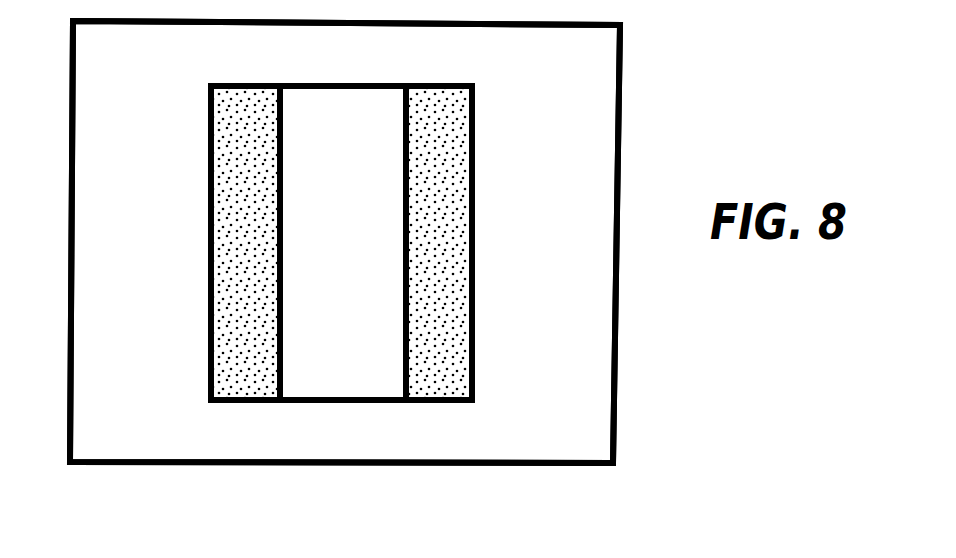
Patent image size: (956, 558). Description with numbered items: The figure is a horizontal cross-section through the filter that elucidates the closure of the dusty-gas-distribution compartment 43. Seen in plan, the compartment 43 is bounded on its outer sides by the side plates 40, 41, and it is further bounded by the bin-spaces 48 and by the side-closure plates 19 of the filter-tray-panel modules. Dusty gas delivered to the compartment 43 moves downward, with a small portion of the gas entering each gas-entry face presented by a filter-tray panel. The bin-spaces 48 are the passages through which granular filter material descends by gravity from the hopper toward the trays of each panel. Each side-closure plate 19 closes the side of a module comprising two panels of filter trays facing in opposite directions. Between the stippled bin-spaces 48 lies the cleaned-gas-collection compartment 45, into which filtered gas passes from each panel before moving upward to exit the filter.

The side plate 40 is at (74, 290).
The side plate 41 is at (518, 28).
The dusty-gas-distribution compartment 43 is at (158, 238).
The side-closure plate 19 is at (330, 90).
The bin-space 48 is at (211, 152).
The cleaned-gas-collection compartment 45 is at (352, 250).